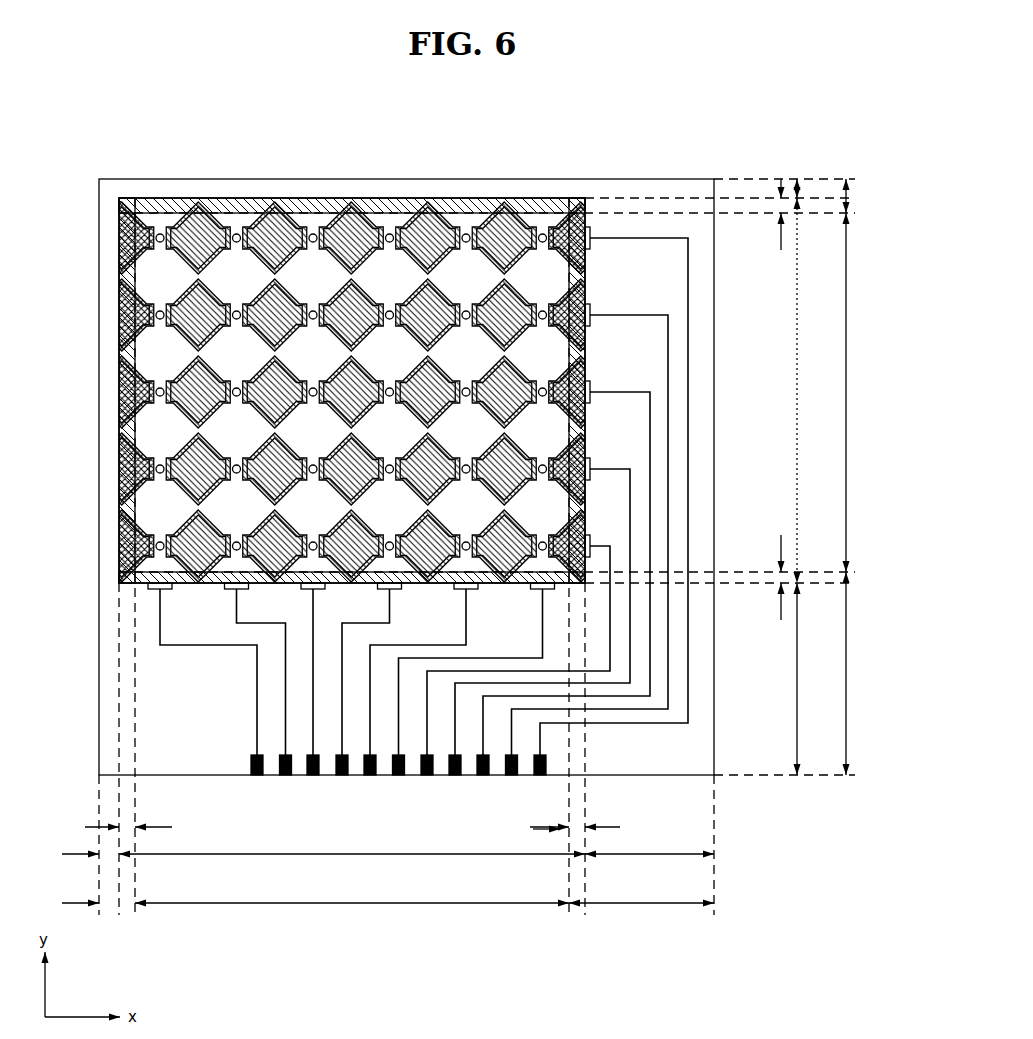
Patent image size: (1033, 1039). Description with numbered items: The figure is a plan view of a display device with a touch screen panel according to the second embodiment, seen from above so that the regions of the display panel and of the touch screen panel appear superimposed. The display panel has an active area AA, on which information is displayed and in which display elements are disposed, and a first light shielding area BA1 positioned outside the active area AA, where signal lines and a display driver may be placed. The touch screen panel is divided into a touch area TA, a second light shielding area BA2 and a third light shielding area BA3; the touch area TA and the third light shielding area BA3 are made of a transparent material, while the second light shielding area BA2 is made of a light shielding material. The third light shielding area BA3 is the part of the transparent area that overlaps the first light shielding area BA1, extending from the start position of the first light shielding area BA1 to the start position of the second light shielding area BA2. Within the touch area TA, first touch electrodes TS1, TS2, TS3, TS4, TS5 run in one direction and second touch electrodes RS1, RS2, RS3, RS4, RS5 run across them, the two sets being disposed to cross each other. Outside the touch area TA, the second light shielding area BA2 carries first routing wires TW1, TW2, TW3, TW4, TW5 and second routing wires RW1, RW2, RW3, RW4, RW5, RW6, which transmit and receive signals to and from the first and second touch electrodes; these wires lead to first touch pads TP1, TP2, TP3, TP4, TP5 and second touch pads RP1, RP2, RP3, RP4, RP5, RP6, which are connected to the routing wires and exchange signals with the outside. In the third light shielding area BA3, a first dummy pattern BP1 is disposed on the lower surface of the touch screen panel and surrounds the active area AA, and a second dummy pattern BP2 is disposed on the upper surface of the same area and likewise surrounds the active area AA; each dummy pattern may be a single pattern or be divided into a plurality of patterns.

The second touch electrode RS1 is at (157, 218).
The second touch electrode RS2 is at (234, 218).
The second touch electrode RS3 is at (311, 218).
The second touch electrode RS4 is at (388, 218).
The second touch electrode RS5 is at (465, 218).
The first dummy pattern BP1 is at (541, 198).
The second dummy pattern BP2 is at (352, 390).
The first touch electrode TS1 is at (119, 237).
The first touch electrode TS2 is at (119, 314).
The first touch electrode TS3 is at (119, 391).
The first touch electrode TS4 is at (119, 468).
The first touch electrode TS5 is at (119, 545).
The first routing wire TW1 is at (688, 272).
The first routing wire TW2 is at (668, 348).
The first routing wire TW3 is at (650, 424).
The first routing wire TW4 is at (630, 499).
The first routing wire TW5 is at (610, 554).
The second routing wire RW1 is at (160, 631).
The second routing wire RW2 is at (236, 605).
The second routing wire RW3 is at (313, 605).
The second routing wire RW4 is at (390, 605).
The second routing wire RW5 is at (466, 605).
The second routing wire RW6 is at (542, 605).
The second touch pad RP1 is at (255, 778).
The second touch pad RP2 is at (286, 778).
The second touch pad RP3 is at (311, 778).
The second touch pad RP4 is at (342, 778).
The second touch pad RP5 is at (368, 778).
The second touch pad RP6 is at (398, 778).
The first touch pad TP1 is at (425, 778).
The first touch pad TP2 is at (455, 778).
The first touch pad TP3 is at (481, 778).
The first touch pad TP4 is at (512, 778).
The first touch pad TP5 is at (538, 778).
The touch area TA is at (577, 519).
The active area AA is at (492, 560).
The first light shielding area BA1 is at (470, 543).
The second light shielding area BA2 is at (442, 518).
The third light shielding area BA3 is at (435, 505).